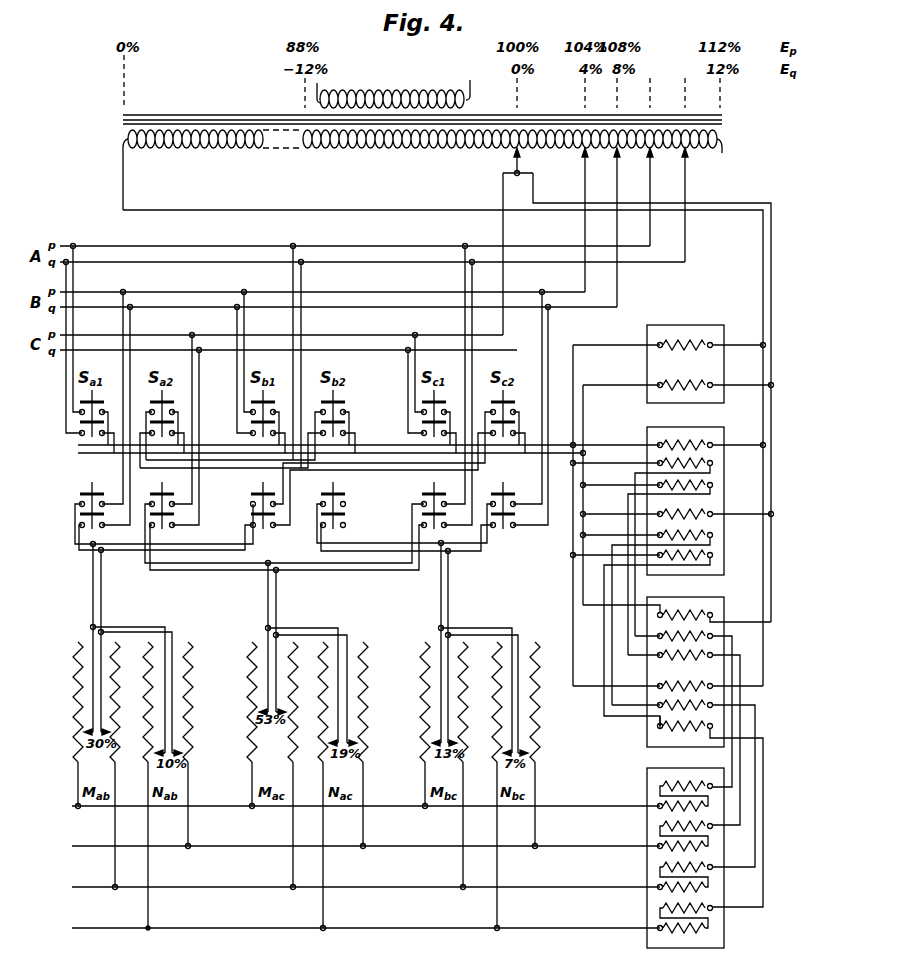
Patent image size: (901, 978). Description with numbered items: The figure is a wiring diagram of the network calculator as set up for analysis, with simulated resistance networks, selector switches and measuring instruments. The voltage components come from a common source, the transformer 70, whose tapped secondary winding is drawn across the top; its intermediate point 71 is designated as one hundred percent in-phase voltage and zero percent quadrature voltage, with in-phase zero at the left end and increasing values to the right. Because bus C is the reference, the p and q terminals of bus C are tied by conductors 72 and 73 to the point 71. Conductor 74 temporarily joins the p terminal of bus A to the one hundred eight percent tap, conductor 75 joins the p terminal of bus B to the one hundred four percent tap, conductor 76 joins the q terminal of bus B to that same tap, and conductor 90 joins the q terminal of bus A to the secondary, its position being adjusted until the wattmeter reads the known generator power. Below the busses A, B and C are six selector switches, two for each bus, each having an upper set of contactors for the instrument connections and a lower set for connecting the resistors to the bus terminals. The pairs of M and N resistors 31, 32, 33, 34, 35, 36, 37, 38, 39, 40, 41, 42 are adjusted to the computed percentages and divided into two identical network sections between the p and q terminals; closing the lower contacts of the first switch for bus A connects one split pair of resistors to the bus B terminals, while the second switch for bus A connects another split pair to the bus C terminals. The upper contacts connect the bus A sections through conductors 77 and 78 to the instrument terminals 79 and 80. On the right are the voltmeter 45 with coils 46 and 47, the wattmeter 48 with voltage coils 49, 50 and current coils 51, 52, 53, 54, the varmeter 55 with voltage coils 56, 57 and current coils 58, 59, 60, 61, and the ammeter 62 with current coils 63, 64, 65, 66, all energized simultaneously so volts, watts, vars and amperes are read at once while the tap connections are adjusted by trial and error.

The M resistor 31 is at (76, 639).
The N resistor 32 is at (116, 639).
The M resistor 33 is at (150, 639).
The N resistor 34 is at (192, 639).
The M resistor 35 is at (253, 639).
The N resistor 36 is at (294, 639).
The M resistor 37 is at (324, 639).
The N resistor 38 is at (364, 639).
The M resistor 39 is at (424, 639).
The N resistor 40 is at (466, 639).
The M resistor 41 is at (497, 639).
The N resistor 42 is at (536, 639).
The voltmeter 45 is at (709, 352).
The voltmeter coil 46 is at (712, 346).
The voltmeter coil 47 is at (712, 384).
The wattmeter 48 is at (672, 566).
The wattmeter voltage coil 49 is at (710, 444).
The wattmeter voltage coil 50 is at (710, 513).
The wattmeter current coil 51 is at (710, 463).
The wattmeter current coil 52 is at (710, 484).
The wattmeter current coil 53 is at (710, 534).
The wattmeter current coil 54 is at (710, 554).
The varmeter 55 is at (682, 741).
The varmeter voltage coil 56 is at (712, 615).
The varmeter voltage coil 57 is at (715, 682).
The varmeter current coil 58 is at (713, 636).
The varmeter current coil 59 is at (713, 655).
The varmeter current coil 60 is at (715, 702).
The varmeter current coil 61 is at (715, 730).
The ammeter 62 is at (719, 847).
The ammeter current coil 63 is at (710, 807).
The ammeter current coil 64 is at (710, 846).
The ammeter current coil 65 is at (710, 886).
The ammeter current coil 66 is at (710, 929).
The transformer 70 is at (405, 152).
The intermediate point of transformer secondary 71 is at (517, 151).
The conductor 72 is at (501, 236).
The conductor 73 is at (517, 242).
The conductor 74 is at (651, 245).
The conductor 75 is at (584, 238).
The conductor 76 is at (616, 242).
The conductor 77 is at (68, 389).
The conductor 78 is at (68, 411).
The instrument terminal 79 is at (573, 372).
The instrument terminal 80 is at (583, 416).
The conductor 90 is at (686, 245).